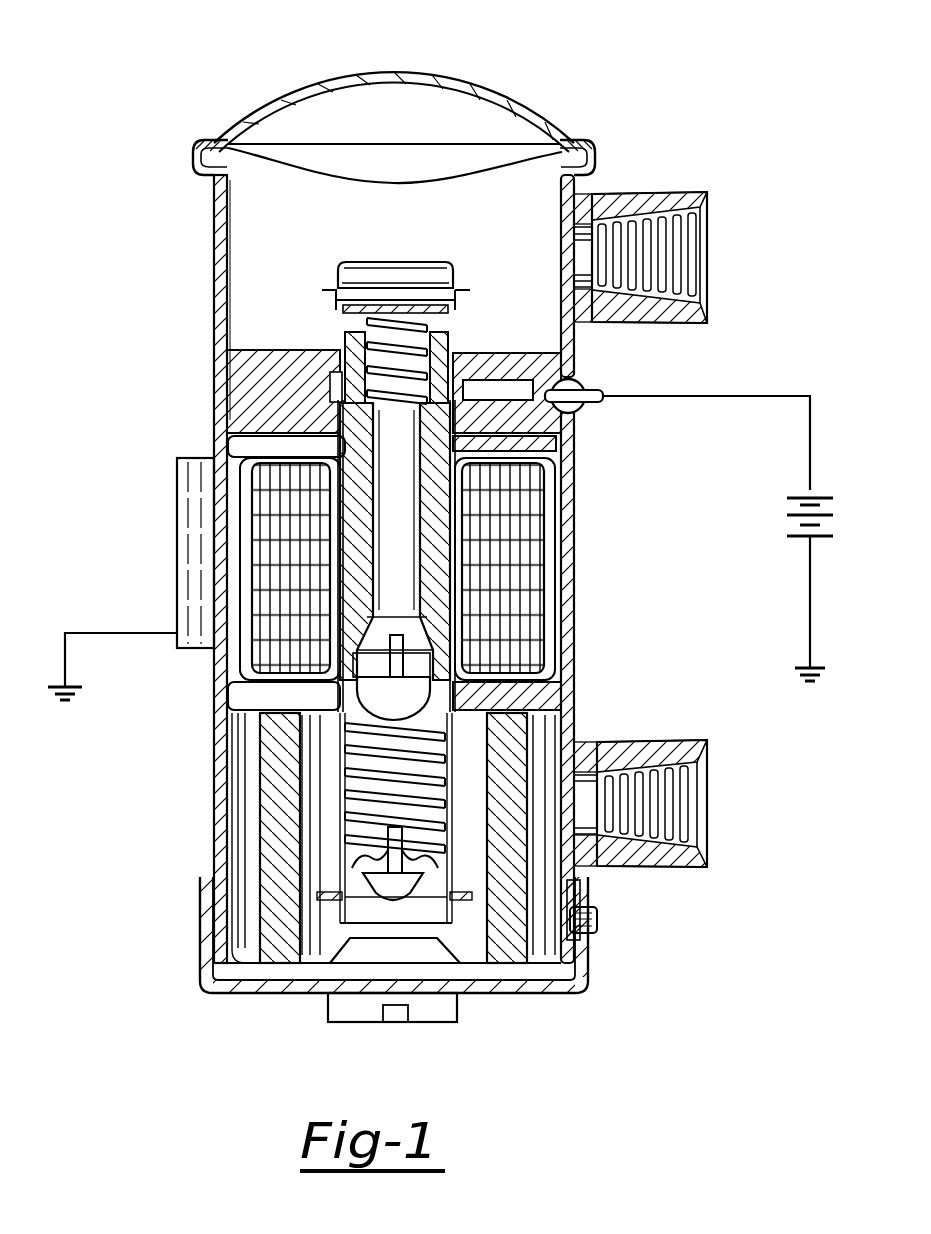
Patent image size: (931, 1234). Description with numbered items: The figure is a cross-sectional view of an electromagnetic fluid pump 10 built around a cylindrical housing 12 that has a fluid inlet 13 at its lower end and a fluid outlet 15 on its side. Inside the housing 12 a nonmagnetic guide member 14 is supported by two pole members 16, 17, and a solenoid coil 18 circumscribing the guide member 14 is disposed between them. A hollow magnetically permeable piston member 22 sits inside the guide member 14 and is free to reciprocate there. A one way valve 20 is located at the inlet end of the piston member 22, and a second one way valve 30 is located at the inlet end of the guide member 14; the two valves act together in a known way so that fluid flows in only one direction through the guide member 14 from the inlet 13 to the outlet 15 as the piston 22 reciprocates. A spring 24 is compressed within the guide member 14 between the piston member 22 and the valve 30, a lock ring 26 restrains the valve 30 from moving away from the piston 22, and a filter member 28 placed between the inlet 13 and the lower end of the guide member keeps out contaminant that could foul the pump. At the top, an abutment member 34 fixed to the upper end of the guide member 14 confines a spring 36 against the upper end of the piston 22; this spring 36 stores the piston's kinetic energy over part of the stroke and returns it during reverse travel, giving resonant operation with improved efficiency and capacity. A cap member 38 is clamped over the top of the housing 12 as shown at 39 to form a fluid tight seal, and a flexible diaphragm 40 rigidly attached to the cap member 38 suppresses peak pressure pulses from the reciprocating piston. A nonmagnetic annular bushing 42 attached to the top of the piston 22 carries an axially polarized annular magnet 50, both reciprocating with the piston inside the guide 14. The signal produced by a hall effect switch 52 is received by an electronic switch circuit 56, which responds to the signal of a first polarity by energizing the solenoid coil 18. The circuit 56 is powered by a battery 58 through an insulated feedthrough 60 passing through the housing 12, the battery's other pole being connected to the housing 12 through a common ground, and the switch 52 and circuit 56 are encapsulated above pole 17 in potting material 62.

The electromagnetic fluid pump 10 is at (338, 22).
The cylindrical housing 12 is at (564, 606).
The fluid inlet 13 is at (676, 752).
The guide member 14 is at (452, 530).
The fluid outlet 15 is at (668, 196).
The pole member 16 is at (542, 697).
The pole member 17 is at (552, 444).
The solenoid coil 18 is at (528, 555).
The one way valve 20 is at (404, 698).
The piston member 22 is at (395, 541).
The spring 24 is at (368, 752).
The lock ring 26 is at (328, 895).
The filter member 28 is at (268, 926).
The one way valve 30 is at (393, 902).
The abutment member 34 is at (440, 268).
The spring 36 is at (452, 336).
The cap member 38 is at (512, 96).
The clamp 39 is at (584, 138).
The flexible diaphragm 40 is at (382, 178).
The annular bushing 42 is at (360, 325).
The annular magnet 50 is at (342, 362).
The hall effect switch 52 is at (328, 364).
The electronic switch circuit 56 is at (487, 380).
The battery 58 is at (805, 538).
The insulated feedthrough 60 is at (598, 392).
The potting material 62 is at (238, 377).